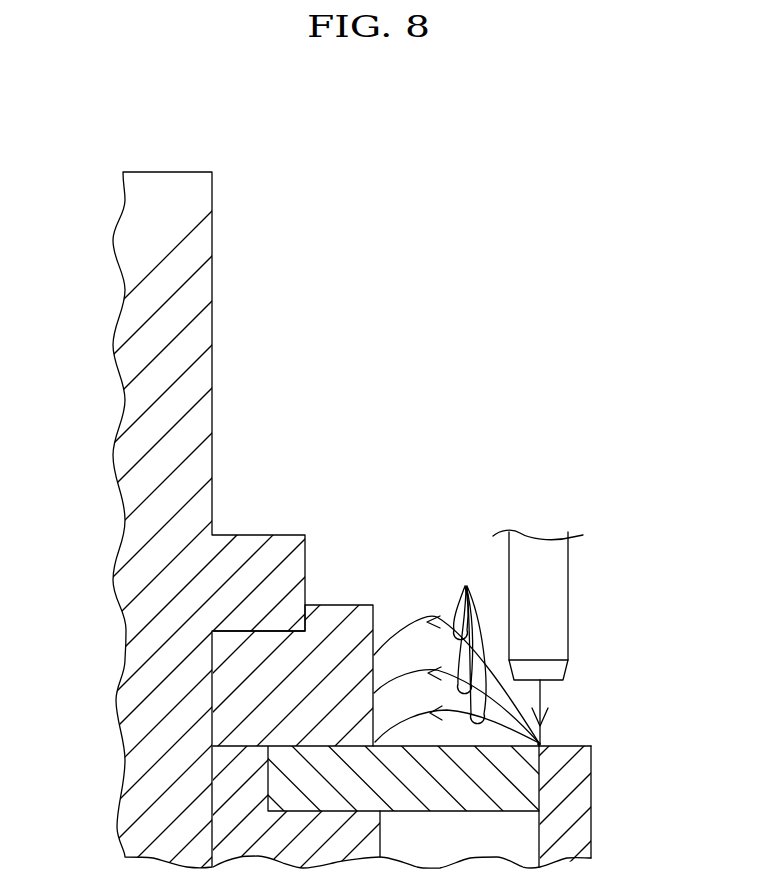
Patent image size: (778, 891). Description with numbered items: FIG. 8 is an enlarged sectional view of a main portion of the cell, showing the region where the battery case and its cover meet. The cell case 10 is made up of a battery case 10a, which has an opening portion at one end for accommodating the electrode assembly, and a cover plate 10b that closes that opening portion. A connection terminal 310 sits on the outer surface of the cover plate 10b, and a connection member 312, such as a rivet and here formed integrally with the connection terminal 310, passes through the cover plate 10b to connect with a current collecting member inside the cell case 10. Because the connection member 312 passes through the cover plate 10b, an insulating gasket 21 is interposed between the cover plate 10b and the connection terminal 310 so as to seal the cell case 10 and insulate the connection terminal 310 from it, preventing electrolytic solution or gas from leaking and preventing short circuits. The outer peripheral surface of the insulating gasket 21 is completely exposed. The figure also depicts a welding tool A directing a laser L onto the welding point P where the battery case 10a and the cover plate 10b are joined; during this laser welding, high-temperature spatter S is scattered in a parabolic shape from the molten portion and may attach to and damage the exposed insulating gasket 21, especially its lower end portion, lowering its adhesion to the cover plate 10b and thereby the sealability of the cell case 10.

The connection terminal 310 is at (200, 292).
The connection member 312 is at (163, 767).
The insulating gasket 21 is at (343, 586).
The cell case 10 is at (458, 742).
The battery case 10a is at (578, 835).
The cover plate 10b is at (495, 780).
The laser head / nozzle A is at (548, 603).
The laser beam L is at (541, 707).
The processing point P is at (540, 744).
The spatter S is at (456, 652).